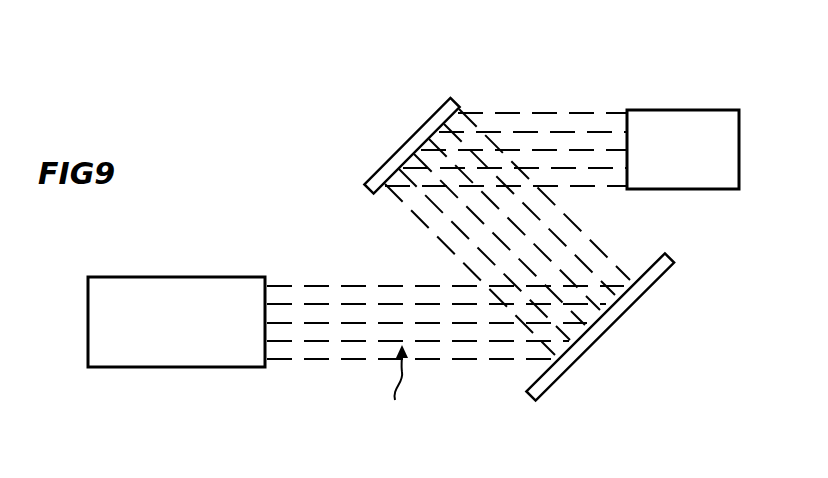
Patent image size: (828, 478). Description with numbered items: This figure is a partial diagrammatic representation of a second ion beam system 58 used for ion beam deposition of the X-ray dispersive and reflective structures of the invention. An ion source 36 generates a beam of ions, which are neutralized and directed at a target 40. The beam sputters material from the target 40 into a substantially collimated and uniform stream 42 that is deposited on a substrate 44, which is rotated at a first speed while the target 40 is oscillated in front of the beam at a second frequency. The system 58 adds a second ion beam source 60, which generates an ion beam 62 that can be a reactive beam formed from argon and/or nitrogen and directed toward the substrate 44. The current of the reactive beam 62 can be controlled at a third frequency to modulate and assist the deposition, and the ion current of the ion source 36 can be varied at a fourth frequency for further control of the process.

The ion source 36 is at (186, 333).
The target 40 is at (598, 326).
The stream 42 is at (426, 214).
The substrate 44 is at (405, 152).
The second ion beam system 58 is at (276, 241).
The second ion beam source 60 is at (694, 162).
The ion beam 62 is at (536, 126).